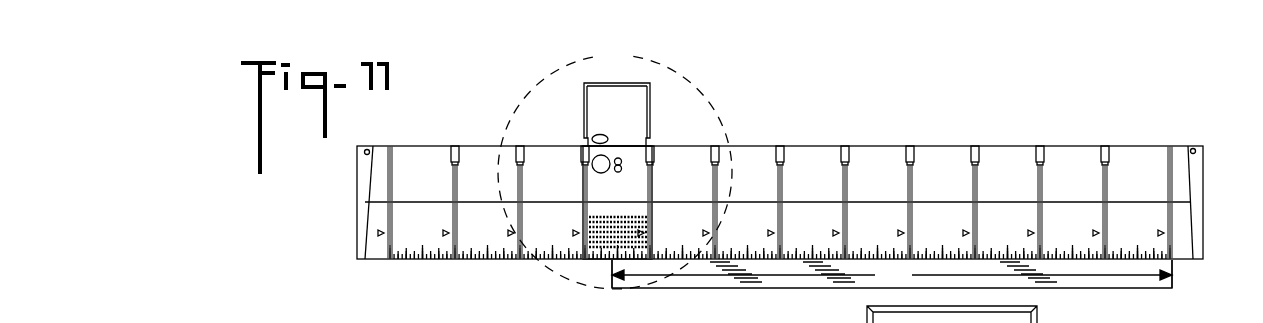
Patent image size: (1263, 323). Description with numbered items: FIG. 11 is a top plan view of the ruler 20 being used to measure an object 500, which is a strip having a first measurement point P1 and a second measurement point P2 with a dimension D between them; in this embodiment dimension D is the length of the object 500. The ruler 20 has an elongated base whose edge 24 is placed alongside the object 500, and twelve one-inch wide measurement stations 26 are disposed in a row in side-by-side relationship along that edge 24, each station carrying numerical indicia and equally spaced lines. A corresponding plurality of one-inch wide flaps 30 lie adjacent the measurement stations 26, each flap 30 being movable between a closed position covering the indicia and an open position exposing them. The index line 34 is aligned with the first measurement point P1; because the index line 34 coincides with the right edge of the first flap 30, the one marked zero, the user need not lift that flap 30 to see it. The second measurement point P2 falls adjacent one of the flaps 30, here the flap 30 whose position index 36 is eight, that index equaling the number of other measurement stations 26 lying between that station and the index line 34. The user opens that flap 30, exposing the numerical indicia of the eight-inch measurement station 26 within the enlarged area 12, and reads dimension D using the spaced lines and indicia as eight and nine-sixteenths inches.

The area 12 is at (637, 56).
The ruler 20 is at (1012, 113).
The edge 24 is at (1112, 261).
The one-inch wide measurement station 26 is at (668, 148).
The flap 30 is at (603, 121).
The index line 34 is at (1175, 262).
The position index 36 is at (585, 148).
The object 500 is at (777, 283).
The first measurement point P1 is at (1173, 262).
The second measurement point P2 is at (612, 262).